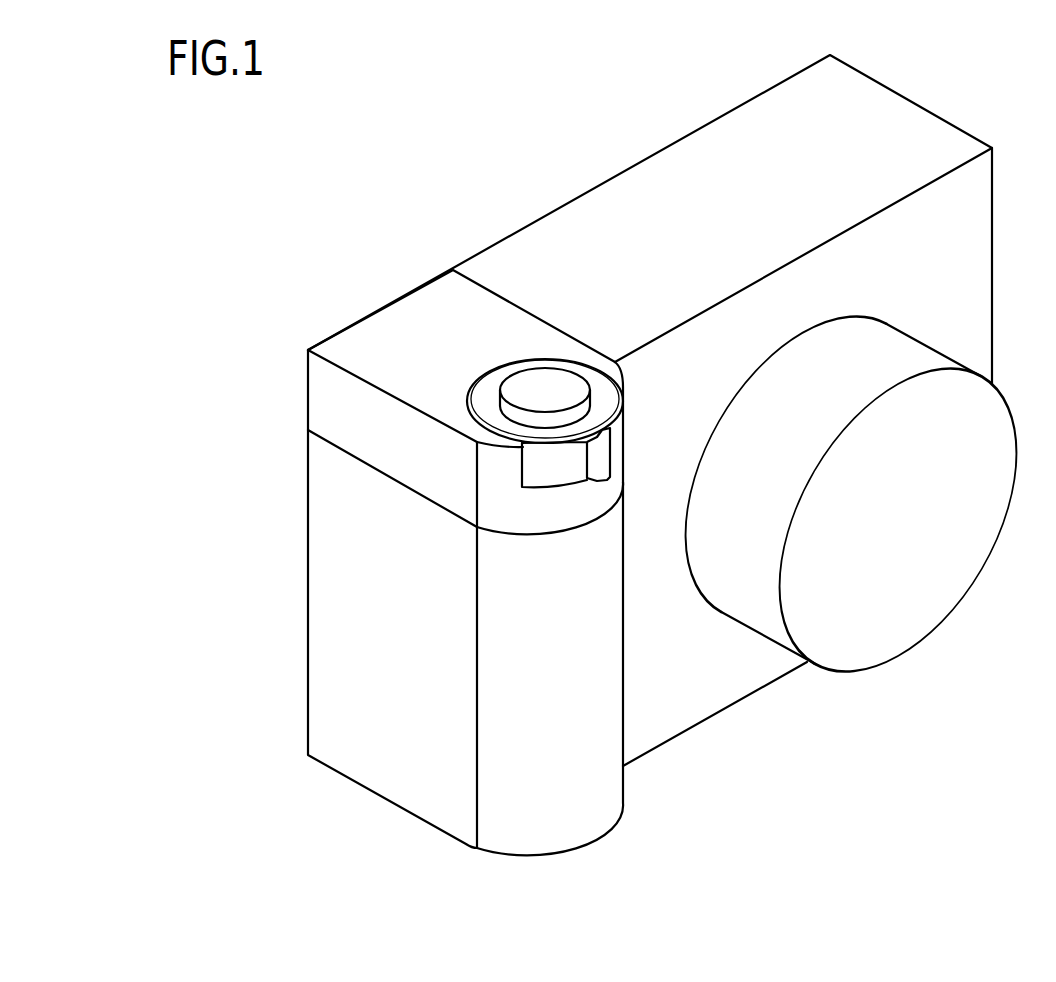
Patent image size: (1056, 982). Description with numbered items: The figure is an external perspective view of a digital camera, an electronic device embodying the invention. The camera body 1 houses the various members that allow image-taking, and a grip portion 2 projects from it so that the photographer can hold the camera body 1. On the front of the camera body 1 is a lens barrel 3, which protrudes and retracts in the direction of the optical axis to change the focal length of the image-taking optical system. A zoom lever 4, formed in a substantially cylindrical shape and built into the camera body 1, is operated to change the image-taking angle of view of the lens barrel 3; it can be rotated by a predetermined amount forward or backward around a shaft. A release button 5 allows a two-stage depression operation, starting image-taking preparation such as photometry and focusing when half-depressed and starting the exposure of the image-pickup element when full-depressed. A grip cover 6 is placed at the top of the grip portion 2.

The camera body 1 is at (915, 122).
The grip portion 2 is at (507, 615).
The lens barrel 3 is at (965, 517).
The zoom lever 4 is at (540, 465).
The release button 5 is at (415, 302).
The grip cover 6 is at (548, 380).